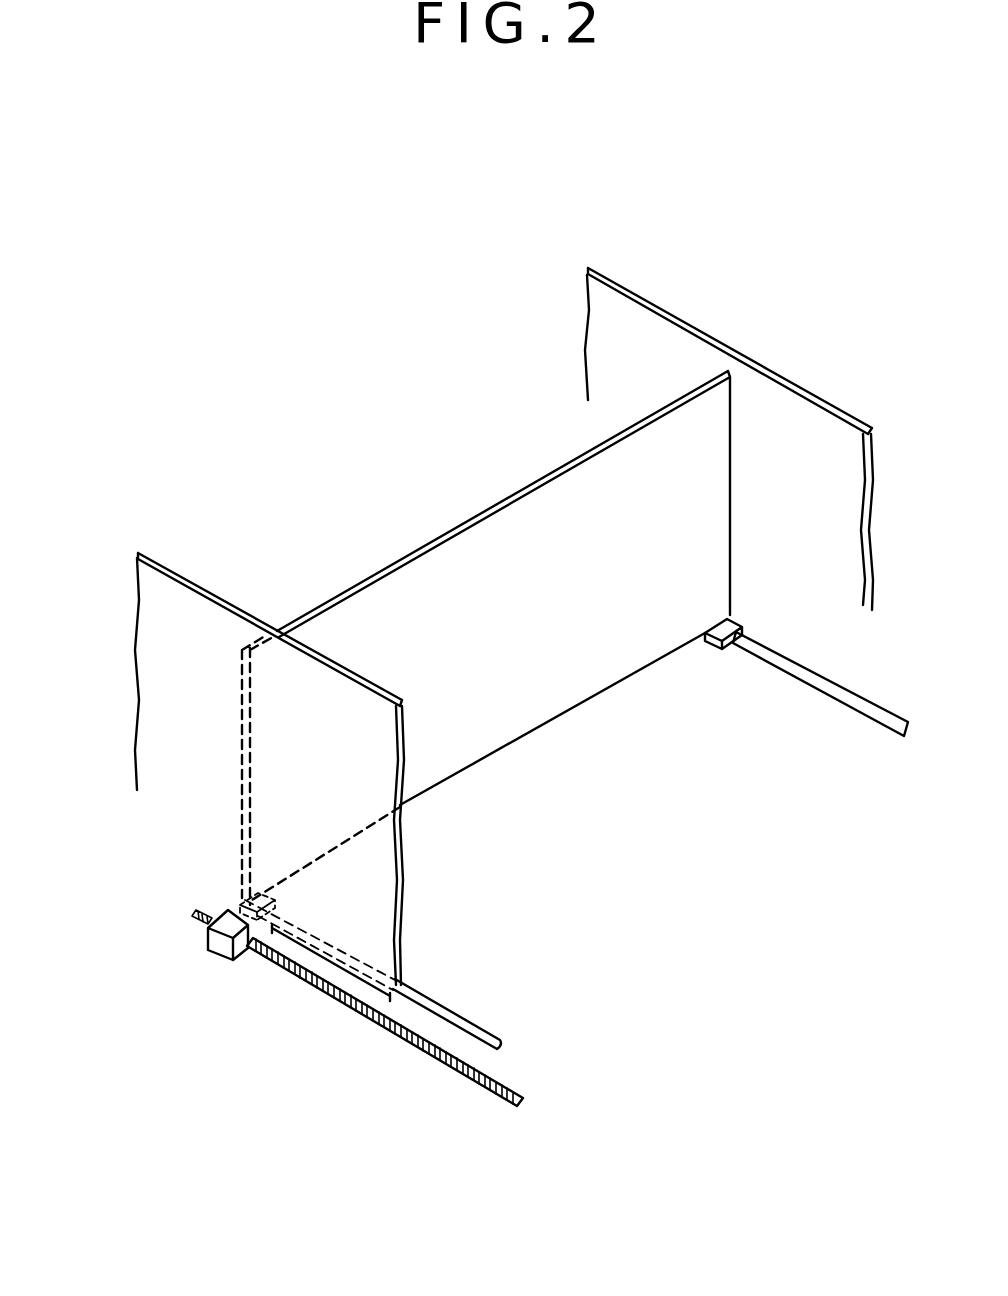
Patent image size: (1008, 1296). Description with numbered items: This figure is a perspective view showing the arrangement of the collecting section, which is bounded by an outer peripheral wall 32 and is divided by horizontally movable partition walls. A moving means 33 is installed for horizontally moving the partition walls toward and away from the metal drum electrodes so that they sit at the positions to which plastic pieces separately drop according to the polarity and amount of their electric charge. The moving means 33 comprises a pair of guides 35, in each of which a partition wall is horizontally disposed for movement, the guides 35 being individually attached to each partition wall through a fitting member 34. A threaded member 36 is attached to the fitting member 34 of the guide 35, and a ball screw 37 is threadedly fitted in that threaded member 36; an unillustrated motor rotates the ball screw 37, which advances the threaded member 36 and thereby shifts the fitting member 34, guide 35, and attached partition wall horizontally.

The outer peripheral wall 32 is at (778, 375).
The moving means 33 is at (487, 1019).
The fitting member 34 is at (708, 643).
The guide 35 is at (850, 708).
The threaded member 36 is at (217, 943).
The ball screw 37 is at (427, 1050).